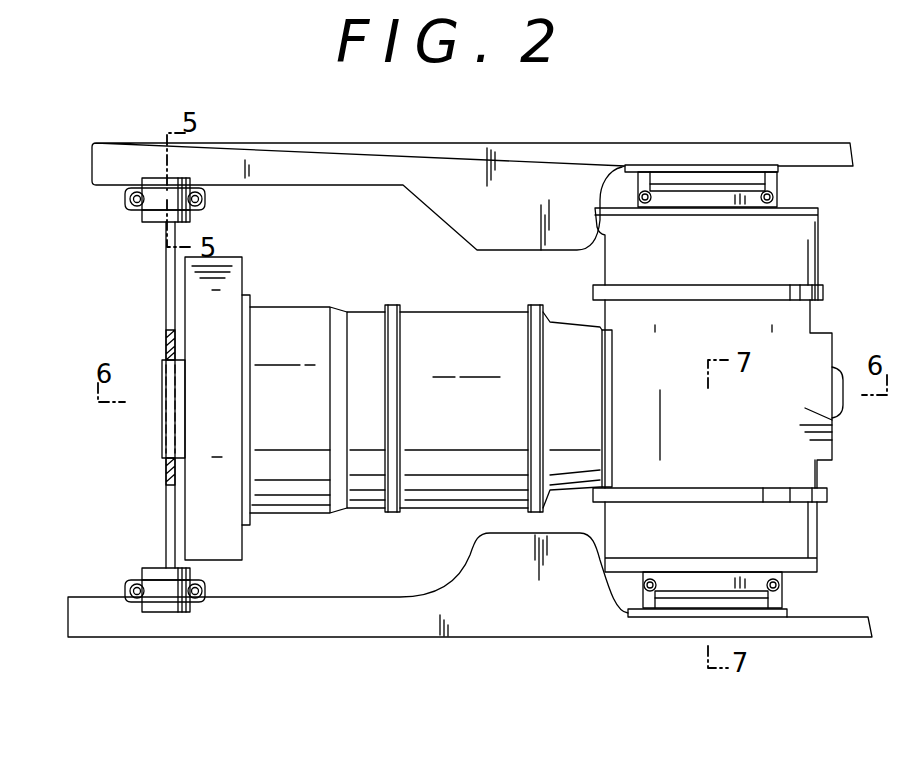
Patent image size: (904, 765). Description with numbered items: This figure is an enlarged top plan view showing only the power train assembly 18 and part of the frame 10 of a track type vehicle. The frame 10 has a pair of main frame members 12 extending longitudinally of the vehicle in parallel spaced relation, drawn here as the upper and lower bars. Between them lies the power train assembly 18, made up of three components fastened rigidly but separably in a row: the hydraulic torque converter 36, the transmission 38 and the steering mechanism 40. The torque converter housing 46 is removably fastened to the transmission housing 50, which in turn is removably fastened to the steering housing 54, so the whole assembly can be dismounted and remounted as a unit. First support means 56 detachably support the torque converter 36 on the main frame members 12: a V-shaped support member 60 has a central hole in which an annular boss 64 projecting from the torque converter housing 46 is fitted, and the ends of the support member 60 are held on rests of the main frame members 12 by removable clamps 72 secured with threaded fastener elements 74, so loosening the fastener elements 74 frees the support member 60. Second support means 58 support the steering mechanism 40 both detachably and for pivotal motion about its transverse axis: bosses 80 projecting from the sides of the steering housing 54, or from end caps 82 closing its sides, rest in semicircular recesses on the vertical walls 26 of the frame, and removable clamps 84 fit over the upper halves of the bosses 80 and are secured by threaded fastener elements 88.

The frame 10 is at (693, 141).
The main frame members 12 is at (527, 163).
The power train assembly 18 is at (398, 392).
The vertical walls 26 is at (829, 157).
The hydraulic torque converter 36 is at (353, 306).
The transmission 38 is at (498, 311).
The steering mechanism 40 is at (828, 306).
The torque converter housing 46 is at (316, 504).
The transmission housing 50 is at (445, 493).
The steering housing 54 is at (835, 425).
The first support means 56 is at (181, 429).
The second support means 58 is at (752, 163).
The support member 60 is at (165, 293).
The boss 64 is at (172, 356).
The clamp 72 is at (170, 214).
The threaded fastener elements 74 is at (203, 200).
The bosses 80 is at (750, 606).
The end caps 82 is at (738, 383).
The clamps 84 is at (710, 200).
The threaded fastener elements 88 is at (646, 205).